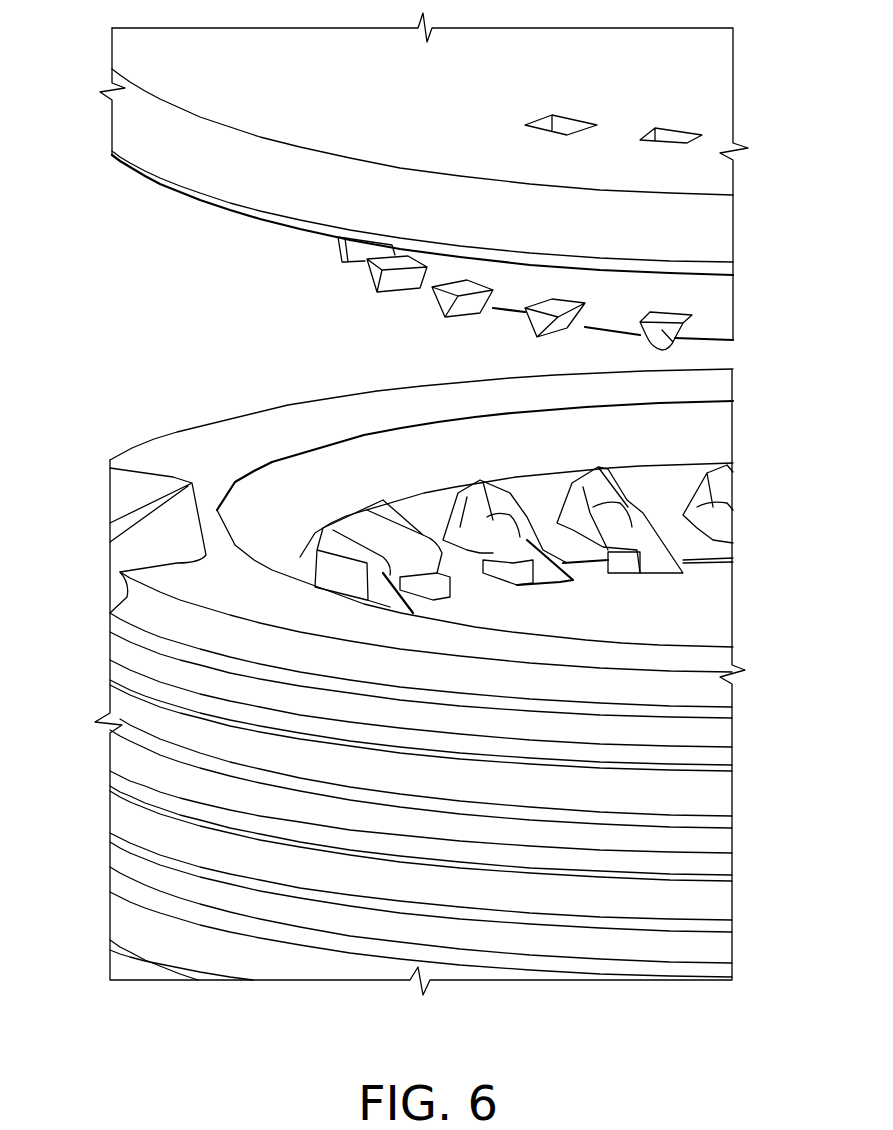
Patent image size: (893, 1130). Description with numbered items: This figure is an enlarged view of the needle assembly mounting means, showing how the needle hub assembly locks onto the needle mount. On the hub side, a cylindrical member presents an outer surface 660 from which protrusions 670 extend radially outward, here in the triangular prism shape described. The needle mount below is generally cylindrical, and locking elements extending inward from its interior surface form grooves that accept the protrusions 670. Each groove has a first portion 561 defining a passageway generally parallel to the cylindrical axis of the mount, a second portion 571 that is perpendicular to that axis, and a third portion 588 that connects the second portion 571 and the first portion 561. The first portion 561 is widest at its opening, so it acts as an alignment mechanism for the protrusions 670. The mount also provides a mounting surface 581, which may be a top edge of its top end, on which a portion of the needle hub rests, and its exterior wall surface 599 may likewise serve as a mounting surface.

The first portion 561 is at (657, 497).
The second portion 571 is at (515, 572).
The mounting surface 581 is at (180, 462).
The third portion 588 is at (572, 555).
The exterior wall surface 599 is at (200, 730).
The outer surface 660 is at (512, 297).
The protrusions 670 is at (375, 278).